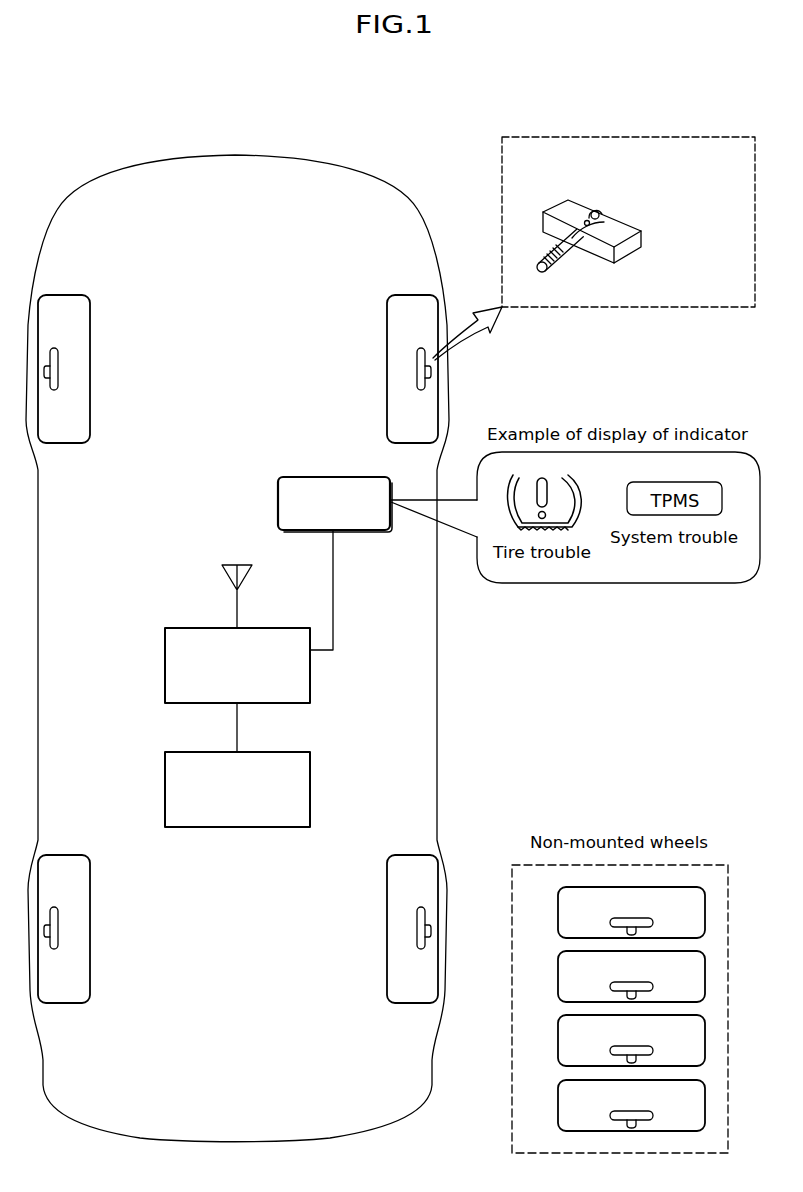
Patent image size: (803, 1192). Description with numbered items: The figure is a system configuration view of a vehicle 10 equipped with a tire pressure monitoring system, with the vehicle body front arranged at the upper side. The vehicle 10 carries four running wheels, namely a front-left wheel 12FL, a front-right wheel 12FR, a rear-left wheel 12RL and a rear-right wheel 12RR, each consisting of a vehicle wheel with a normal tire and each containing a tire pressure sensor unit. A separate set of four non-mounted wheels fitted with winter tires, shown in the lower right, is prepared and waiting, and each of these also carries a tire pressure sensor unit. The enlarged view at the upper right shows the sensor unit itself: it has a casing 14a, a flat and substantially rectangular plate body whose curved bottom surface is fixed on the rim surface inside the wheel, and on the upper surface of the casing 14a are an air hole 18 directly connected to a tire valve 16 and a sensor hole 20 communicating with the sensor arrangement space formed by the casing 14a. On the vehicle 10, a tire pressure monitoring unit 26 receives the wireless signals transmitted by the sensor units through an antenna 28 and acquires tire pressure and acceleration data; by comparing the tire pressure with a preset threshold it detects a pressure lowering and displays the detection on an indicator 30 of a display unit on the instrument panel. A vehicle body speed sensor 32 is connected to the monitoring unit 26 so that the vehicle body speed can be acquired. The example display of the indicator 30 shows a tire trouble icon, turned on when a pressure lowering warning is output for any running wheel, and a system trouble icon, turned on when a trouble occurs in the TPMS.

The vehicle 10 is at (238, 155).
The front-left wheel 12FL is at (72, 295).
The front-right wheel 12FR is at (403, 295).
The rear-left wheel 12RL is at (66, 855).
The rear-right wheel 12RR is at (409, 855).
The casing 14a is at (633, 260).
The tire valve 16 is at (554, 272).
The air hole 18 is at (587, 220).
The sensor hole 20 is at (598, 214).
The tire pressure monitoring unit 26 is at (187, 628).
The antenna 28 is at (229, 565).
The indicator 30 is at (333, 477).
The vehicle body speed sensor 32 is at (165, 772).